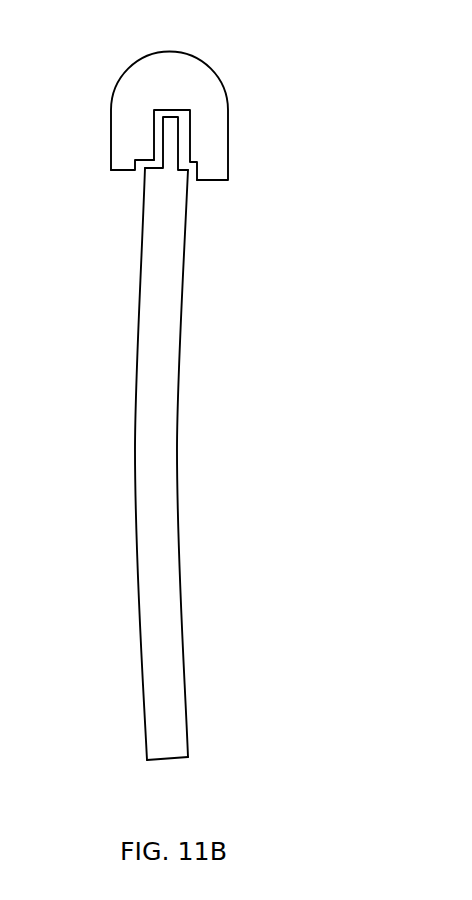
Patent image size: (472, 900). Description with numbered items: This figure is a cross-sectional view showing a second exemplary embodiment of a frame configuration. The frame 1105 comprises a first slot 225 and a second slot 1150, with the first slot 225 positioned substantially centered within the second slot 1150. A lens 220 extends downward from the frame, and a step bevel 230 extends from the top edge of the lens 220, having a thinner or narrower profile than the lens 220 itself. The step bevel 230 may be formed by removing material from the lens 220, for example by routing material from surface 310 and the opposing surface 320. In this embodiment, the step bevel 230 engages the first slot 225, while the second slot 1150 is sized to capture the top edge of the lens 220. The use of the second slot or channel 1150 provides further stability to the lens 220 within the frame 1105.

The frame 1105 is at (197, 74).
The second slot 1150 is at (138, 170).
The step bevel 230 is at (179, 134).
The first slot 225 is at (155, 137).
The opposing surface 320 is at (181, 340).
The surface 310 is at (136, 446).
The lens 220 is at (169, 760).